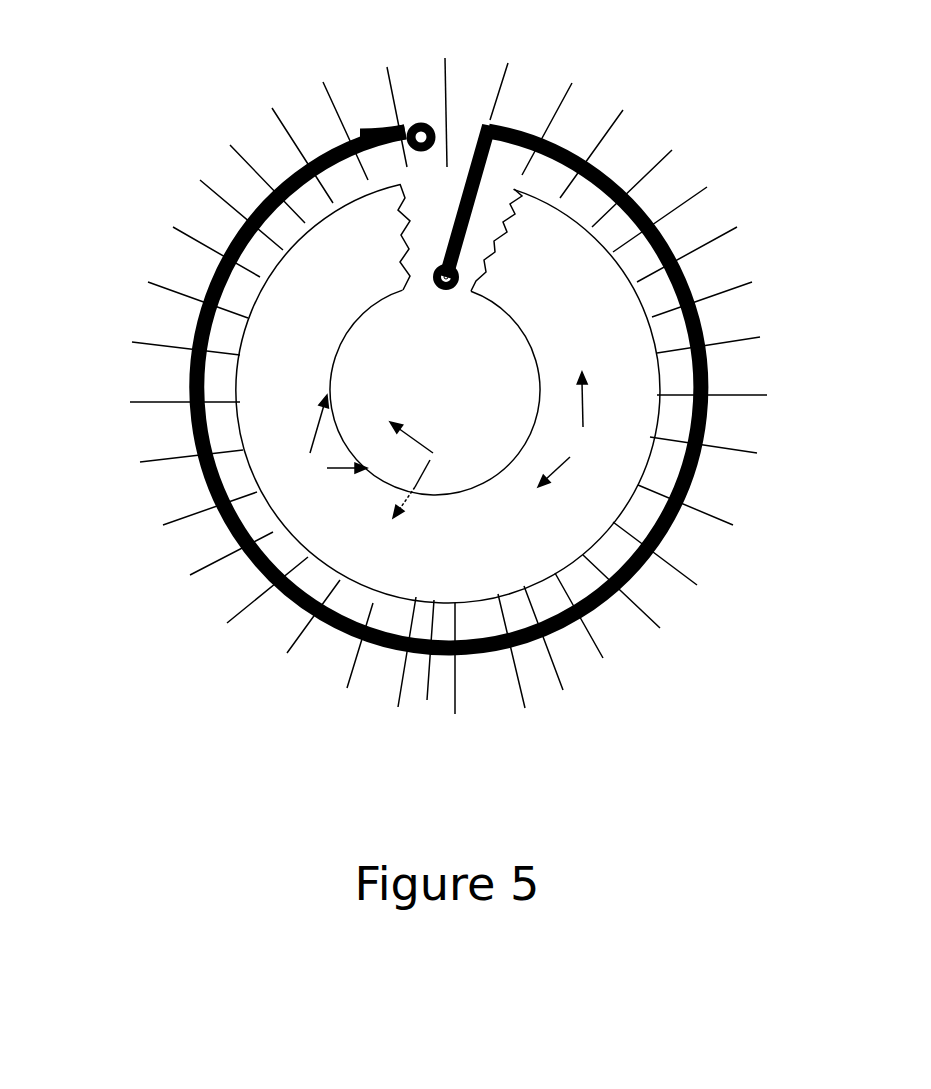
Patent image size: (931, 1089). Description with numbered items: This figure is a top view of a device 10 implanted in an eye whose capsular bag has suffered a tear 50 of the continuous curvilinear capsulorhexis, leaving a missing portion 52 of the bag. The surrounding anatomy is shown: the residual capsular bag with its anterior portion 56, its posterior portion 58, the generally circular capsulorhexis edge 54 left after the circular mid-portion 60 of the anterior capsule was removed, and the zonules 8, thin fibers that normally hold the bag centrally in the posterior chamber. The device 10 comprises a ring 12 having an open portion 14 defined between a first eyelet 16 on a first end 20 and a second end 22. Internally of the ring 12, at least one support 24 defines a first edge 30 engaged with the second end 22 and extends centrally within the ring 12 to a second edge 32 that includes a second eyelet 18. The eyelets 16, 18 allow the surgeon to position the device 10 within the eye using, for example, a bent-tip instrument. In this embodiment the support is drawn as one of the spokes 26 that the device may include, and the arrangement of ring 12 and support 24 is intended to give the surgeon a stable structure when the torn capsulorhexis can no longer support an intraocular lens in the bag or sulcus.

The zonules 8 is at (233, 617).
The device 10 is at (172, 139).
The ring 12 is at (200, 278).
The open portion 14 is at (442, 123).
The first eyelet 16 is at (405, 128).
The second eyelet 18 is at (440, 288).
The first end 20 is at (418, 122).
The second end 22 is at (490, 118).
The support 24 is at (395, 237).
The spokes 26 is at (404, 237).
The first edge 30 is at (493, 137).
The second edge 32 is at (434, 263).
The tear 50 is at (438, 237).
The missing portion 52 is at (496, 240).
The capsulorhexis edge 54 is at (333, 436).
The anterior portion 56 is at (565, 429).
The posterior portion 58 is at (425, 470).
The mid-portion 60 is at (435, 392).